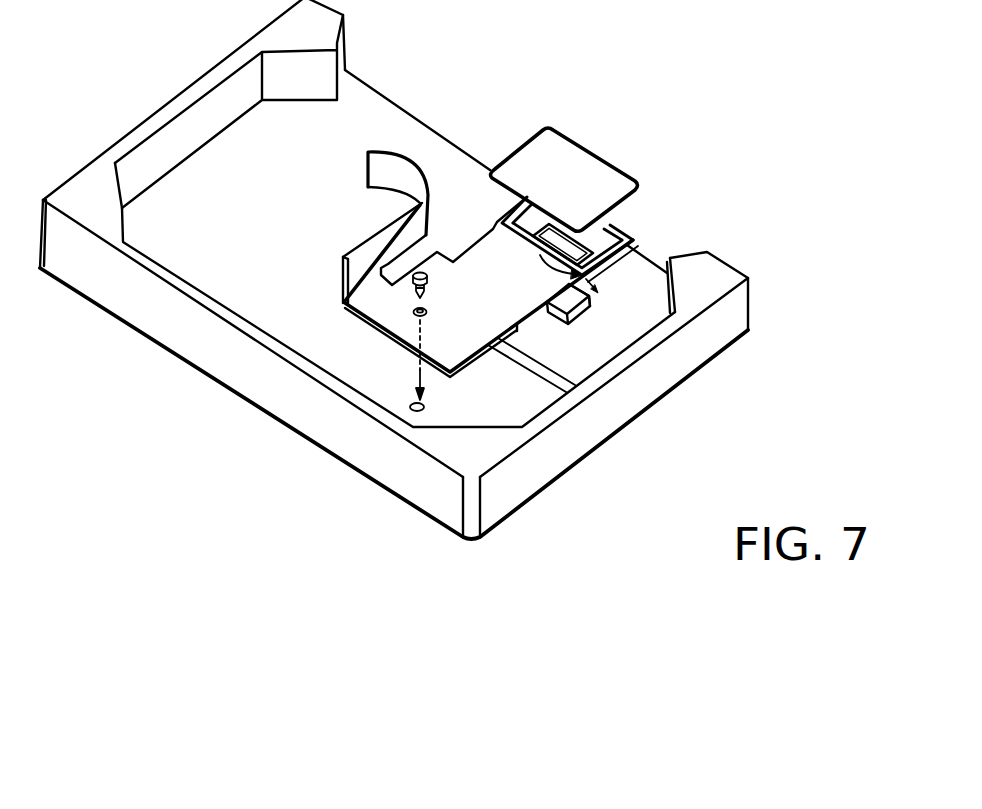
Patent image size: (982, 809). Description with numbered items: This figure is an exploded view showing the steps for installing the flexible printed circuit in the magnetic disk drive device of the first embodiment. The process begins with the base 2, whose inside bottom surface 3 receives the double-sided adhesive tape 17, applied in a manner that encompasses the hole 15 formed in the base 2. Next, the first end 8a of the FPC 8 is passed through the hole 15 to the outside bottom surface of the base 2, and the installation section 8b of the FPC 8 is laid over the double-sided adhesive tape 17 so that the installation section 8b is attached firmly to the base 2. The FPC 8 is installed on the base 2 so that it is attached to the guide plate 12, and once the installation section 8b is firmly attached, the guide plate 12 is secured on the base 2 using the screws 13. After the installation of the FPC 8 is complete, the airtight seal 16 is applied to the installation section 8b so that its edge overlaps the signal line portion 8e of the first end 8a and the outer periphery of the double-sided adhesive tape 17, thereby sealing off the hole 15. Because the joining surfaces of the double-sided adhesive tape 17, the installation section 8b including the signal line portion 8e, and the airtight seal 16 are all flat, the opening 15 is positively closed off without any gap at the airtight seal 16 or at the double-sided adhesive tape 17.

The base 2 is at (248, 392).
The inside bottom surface 3 is at (312, 180).
The FPC 8 is at (474, 246).
The first end 8a is at (603, 285).
The installation section 8b is at (636, 241).
The signal line portion 8e is at (580, 321).
The guide plate 12 is at (340, 280).
The screws 13 is at (428, 288).
The hole 15 is at (507, 360).
The airtight seal 16 is at (560, 128).
The double-sided adhesive tape 17 is at (557, 312).